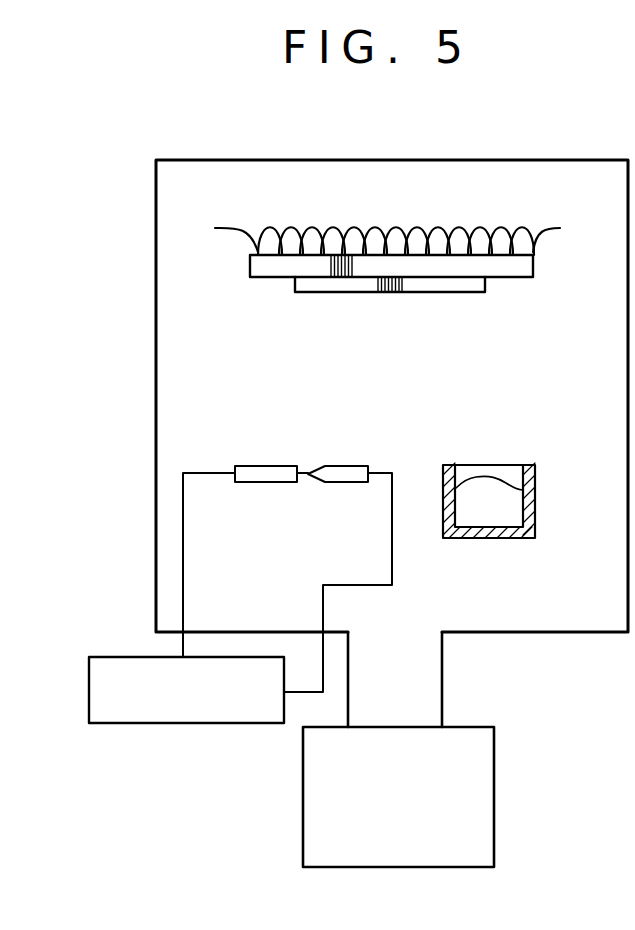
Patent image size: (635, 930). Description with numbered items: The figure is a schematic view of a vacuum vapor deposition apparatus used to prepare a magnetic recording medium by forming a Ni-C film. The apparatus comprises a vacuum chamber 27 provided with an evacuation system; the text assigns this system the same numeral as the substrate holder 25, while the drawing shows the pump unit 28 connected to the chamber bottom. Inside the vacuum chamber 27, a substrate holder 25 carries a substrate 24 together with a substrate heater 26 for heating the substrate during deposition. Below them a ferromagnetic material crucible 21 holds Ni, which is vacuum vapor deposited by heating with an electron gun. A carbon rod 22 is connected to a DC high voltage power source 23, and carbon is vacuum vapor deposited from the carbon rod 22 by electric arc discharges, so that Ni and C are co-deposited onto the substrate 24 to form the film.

The ferromagnetic material crucible 21 is at (537, 497).
The carbon rod 22 is at (270, 466).
The DC high voltage power source 23 is at (180, 723).
The substrate 24 is at (345, 292).
The substrate holder 25 is at (525, 262).
The substrate heater 26 is at (475, 227).
The vacuum chamber 27 is at (156, 513).
The vacuum pump 28 is at (494, 785).